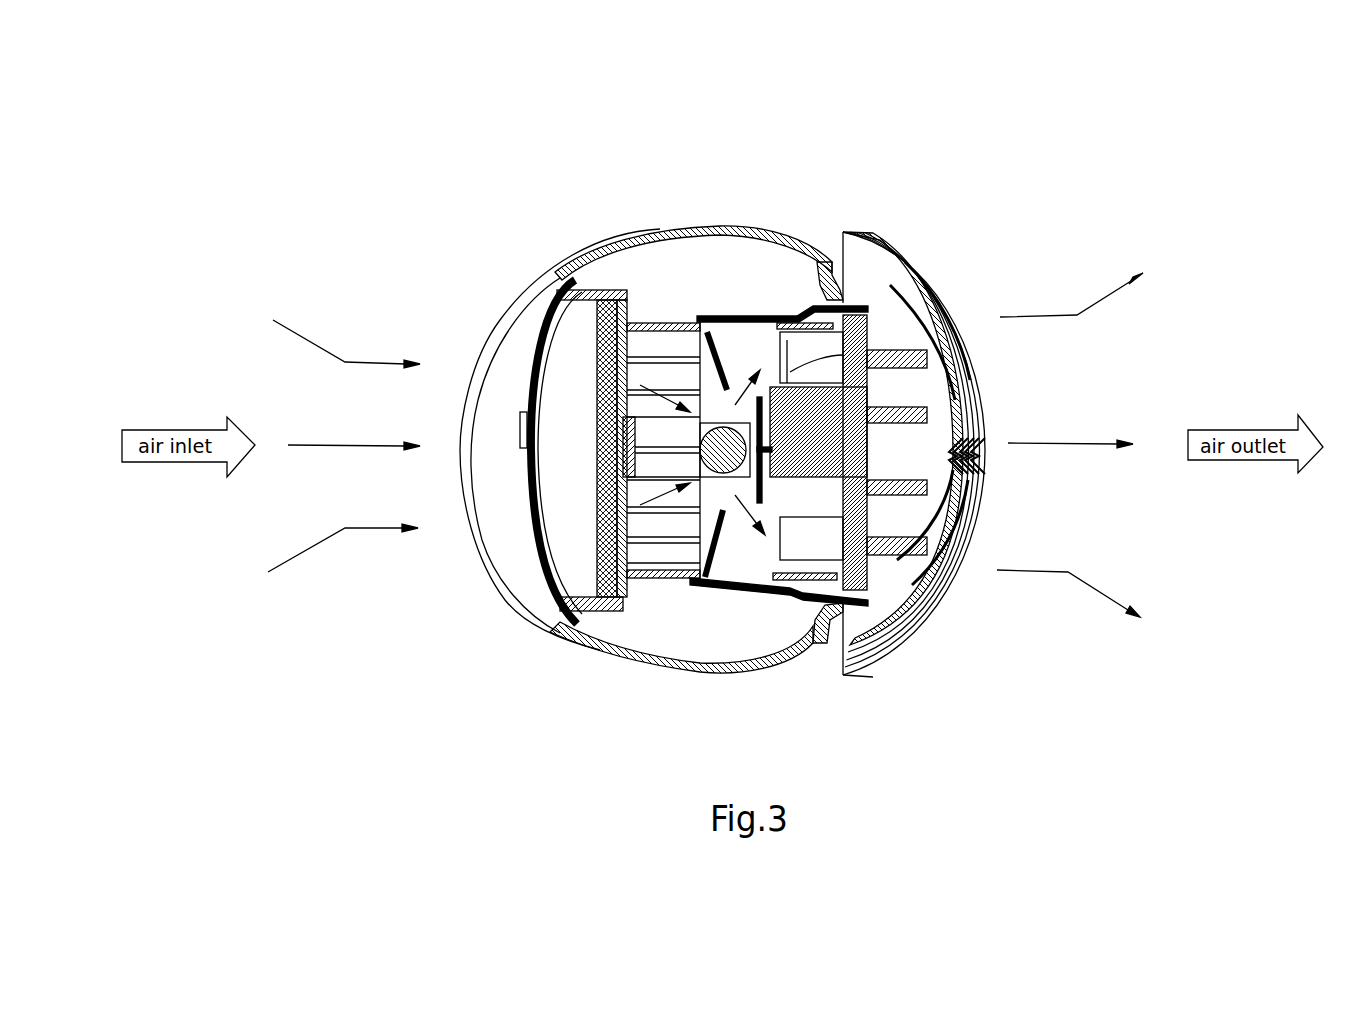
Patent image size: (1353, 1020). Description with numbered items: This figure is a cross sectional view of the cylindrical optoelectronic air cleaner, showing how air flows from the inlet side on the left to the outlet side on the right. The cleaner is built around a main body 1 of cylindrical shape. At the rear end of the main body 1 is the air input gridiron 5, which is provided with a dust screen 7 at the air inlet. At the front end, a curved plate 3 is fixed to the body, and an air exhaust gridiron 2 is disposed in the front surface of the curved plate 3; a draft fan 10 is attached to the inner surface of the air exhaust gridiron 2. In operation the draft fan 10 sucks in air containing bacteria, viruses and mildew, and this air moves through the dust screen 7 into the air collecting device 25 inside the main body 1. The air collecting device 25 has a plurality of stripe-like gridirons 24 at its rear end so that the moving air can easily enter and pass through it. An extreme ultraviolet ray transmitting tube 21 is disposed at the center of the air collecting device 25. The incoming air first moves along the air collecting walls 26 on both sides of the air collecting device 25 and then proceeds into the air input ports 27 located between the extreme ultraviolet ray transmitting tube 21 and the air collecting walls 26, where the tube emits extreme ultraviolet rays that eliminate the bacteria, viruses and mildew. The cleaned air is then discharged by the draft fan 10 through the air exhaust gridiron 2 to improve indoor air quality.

The main body 1 is at (737, 677).
The air exhaust gridiron 2 is at (980, 480).
The curved plate 3 is at (887, 653).
The air input gridiron 5 is at (605, 525).
The dust screen 7 is at (588, 308).
The draft fan 10 is at (870, 320).
The extreme ultraviolet ray transmitting tube 21 is at (700, 437).
The stripe-like gridirons 24 is at (590, 596).
The air collecting device 25 is at (753, 317).
The air collecting wall 26 is at (700, 345).
The air input ports 27 is at (733, 513).